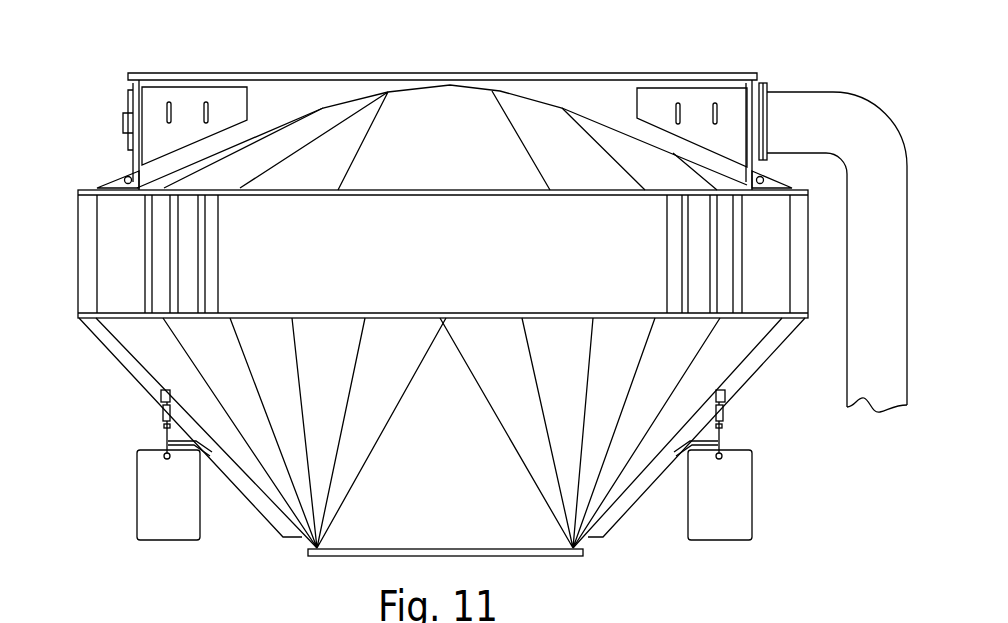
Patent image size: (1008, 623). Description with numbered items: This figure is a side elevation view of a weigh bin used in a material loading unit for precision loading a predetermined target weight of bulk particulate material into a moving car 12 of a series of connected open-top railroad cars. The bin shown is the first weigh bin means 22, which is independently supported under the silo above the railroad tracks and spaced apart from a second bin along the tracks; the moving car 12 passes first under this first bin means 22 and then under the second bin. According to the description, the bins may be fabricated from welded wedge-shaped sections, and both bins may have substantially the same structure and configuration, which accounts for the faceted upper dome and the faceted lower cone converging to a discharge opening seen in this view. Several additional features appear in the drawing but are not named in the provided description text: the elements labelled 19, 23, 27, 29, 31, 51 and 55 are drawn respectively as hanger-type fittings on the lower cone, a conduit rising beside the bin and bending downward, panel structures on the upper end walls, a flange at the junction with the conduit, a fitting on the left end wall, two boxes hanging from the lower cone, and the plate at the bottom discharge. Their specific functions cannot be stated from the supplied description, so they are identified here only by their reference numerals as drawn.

The moving car 12 is at (66, 255).
The hanger assembly 19 is at (727, 403).
The first weigh bin means 22 is at (826, 263).
The conduit pipe 23 is at (847, 355).
The access panel 27 is at (185, 102).
The flange 29 is at (755, 118).
The bracket 31 is at (130, 103).
The counterweight box 51 is at (160, 503).
The outlet plate 55 is at (357, 553).